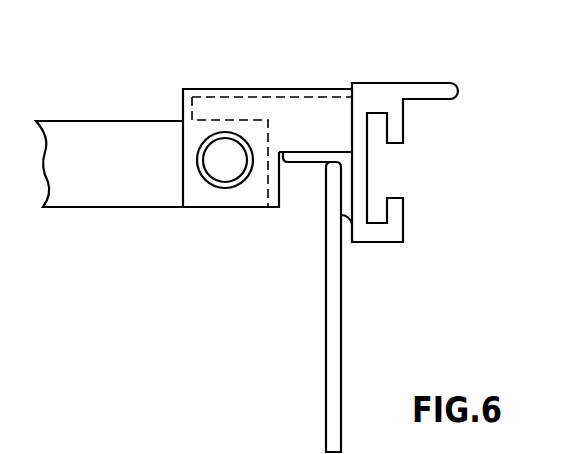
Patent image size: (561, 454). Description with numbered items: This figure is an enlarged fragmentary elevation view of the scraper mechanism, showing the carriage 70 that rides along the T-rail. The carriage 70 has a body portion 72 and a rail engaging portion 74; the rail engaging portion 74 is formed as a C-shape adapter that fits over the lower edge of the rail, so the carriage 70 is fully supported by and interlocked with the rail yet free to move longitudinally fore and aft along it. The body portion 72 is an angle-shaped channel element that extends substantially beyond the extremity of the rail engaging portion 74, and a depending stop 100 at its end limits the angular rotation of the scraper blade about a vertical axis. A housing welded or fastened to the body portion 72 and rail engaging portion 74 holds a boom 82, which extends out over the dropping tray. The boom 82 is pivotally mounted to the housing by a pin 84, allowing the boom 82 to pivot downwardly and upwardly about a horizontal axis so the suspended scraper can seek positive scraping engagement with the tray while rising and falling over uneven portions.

The carriage 70 is at (411, 131).
The body portion 72 is at (308, 156).
The rail engaging portion 74 is at (363, 171).
The boom 82 is at (148, 193).
The pin 84 is at (228, 153).
The depending stop 100 is at (337, 323).